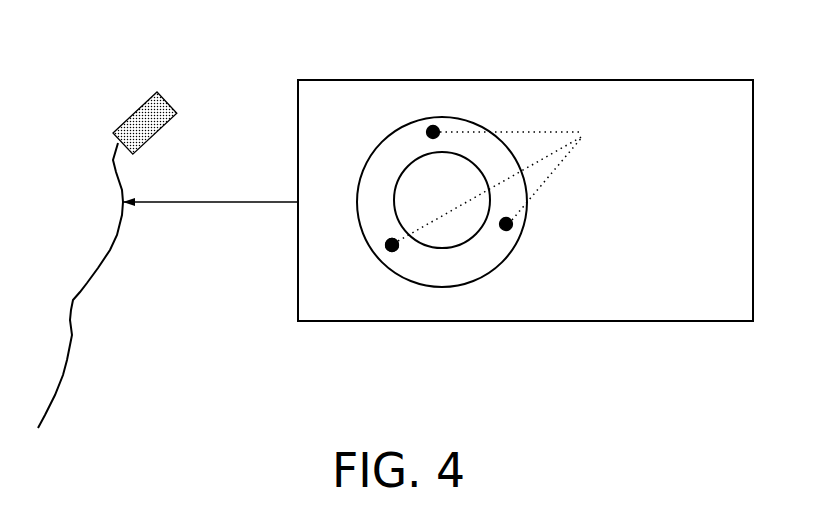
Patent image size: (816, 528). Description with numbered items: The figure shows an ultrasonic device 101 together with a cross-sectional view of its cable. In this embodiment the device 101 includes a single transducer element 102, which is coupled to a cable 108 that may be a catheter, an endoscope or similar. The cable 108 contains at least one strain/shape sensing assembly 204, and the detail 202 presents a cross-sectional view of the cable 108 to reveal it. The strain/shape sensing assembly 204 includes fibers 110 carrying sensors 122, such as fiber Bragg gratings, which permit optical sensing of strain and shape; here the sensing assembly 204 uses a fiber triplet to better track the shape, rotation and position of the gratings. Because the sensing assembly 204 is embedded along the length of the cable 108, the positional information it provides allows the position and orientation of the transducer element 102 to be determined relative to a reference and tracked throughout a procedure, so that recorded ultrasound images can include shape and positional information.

The device 101 is at (123, 108).
The transducer element 102 is at (162, 118).
The cable 108 is at (87, 284).
The fibers 110 is at (435, 123).
The sensors 122 is at (387, 243).
The detail 202 is at (485, 322).
The strain/shape sensing assembly 204 is at (568, 128).